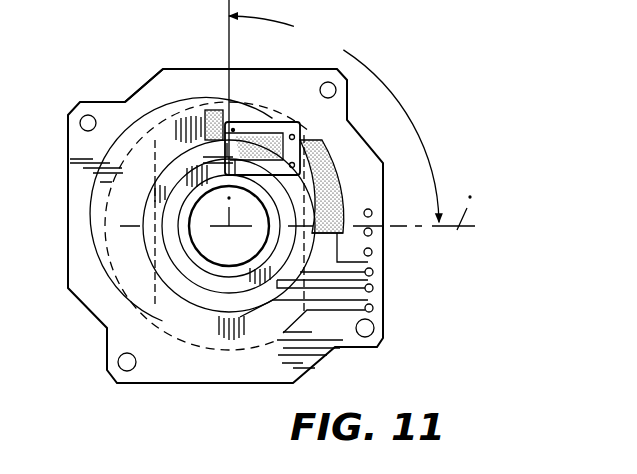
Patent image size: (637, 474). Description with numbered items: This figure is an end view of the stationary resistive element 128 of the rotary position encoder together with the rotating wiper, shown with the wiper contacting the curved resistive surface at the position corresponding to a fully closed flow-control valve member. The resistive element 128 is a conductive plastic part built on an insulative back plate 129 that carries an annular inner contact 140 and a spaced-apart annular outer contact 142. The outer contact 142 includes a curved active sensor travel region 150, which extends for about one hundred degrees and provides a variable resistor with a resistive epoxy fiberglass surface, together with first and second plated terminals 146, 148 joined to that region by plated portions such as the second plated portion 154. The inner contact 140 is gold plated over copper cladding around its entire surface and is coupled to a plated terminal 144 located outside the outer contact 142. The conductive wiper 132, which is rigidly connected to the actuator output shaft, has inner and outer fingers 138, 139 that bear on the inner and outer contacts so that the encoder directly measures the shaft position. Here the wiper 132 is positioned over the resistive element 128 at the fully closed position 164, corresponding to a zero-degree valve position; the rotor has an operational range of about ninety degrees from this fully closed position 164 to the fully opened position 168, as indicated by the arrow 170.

The resistive element 128 is at (134, 91).
The insulative back plate 129 is at (163, 92).
The conductive wiper 132 is at (303, 148).
The inner finger 138 is at (215, 160).
The outer finger 139 is at (233, 128).
The annular inner contact 140 is at (167, 233).
The annular outer contact 142 is at (208, 117).
The plated terminal 144 is at (377, 288).
The first plated terminal 146 is at (377, 272).
The second plated terminal 148 is at (377, 313).
The active sensor travel region 150 is at (332, 200).
The second plated portion 154 is at (137, 275).
The fully closed position 164 is at (229, 32).
The fully opened position 168 is at (301, 199).
The arrow 170 is at (334, 119).